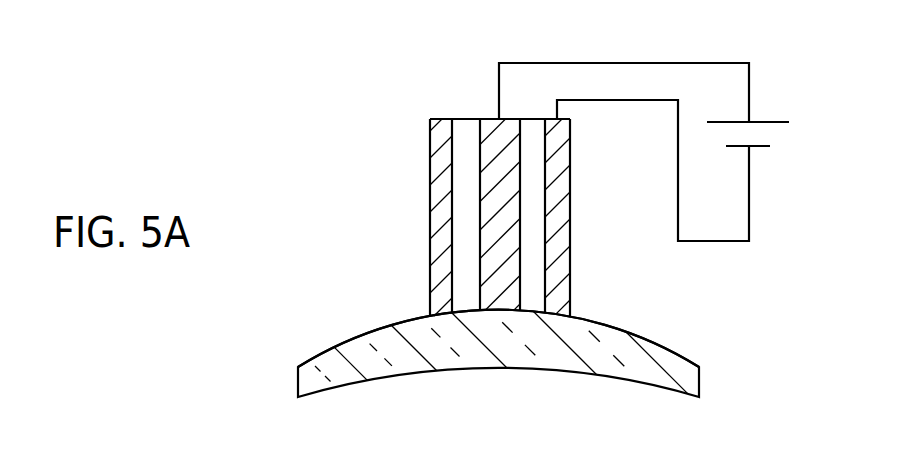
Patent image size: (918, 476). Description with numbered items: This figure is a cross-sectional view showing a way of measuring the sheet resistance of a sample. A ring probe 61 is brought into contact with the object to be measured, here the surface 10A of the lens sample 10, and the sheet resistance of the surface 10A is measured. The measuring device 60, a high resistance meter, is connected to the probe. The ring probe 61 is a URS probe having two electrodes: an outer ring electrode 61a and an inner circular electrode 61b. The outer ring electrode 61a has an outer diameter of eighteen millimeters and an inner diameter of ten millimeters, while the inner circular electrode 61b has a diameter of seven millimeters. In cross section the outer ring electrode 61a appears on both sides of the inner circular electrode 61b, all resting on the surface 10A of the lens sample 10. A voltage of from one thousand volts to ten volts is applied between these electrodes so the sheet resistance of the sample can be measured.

The lens sample 10 is at (699, 378).
The surface of the lens sample 10A is at (350, 340).
The measuring device 60 is at (640, 271).
The ring probe 61 is at (474, 158).
The outer ring electrode 61a is at (430, 152).
The inner circular electrode 61b is at (490, 118).